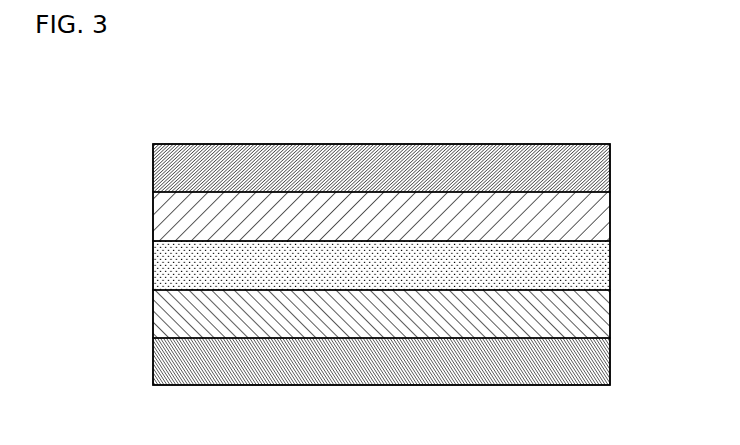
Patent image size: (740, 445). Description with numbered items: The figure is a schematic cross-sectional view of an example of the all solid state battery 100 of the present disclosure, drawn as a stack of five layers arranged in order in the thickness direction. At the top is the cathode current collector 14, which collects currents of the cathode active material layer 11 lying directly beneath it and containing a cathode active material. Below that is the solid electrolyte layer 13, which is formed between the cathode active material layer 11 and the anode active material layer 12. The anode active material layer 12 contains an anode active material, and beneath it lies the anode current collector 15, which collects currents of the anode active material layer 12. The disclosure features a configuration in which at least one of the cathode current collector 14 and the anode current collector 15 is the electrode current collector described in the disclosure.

The all solid state battery 100 is at (414, 235).
The cathode current collector 14 is at (600, 165).
The cathode active material layer 11 is at (598, 216).
The solid electrolyte layer 13 is at (598, 265).
The anode active material layer 12 is at (598, 312).
The anode current collector 15 is at (598, 361).